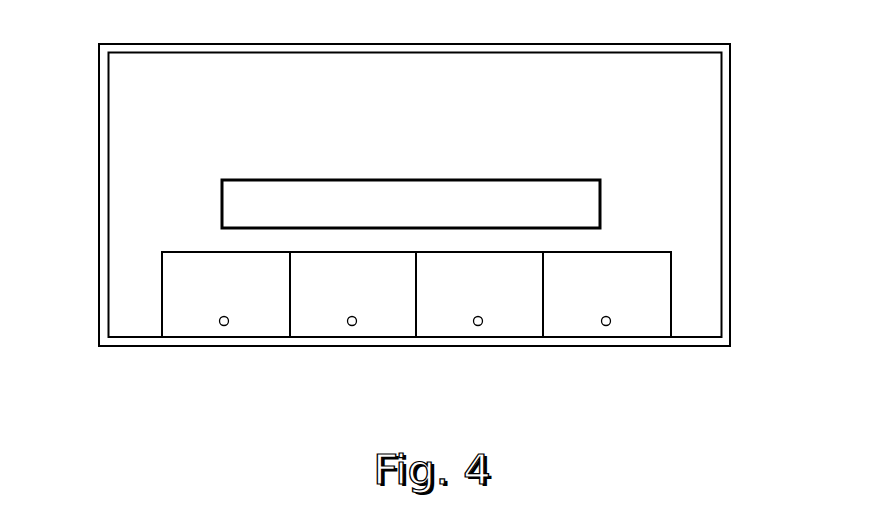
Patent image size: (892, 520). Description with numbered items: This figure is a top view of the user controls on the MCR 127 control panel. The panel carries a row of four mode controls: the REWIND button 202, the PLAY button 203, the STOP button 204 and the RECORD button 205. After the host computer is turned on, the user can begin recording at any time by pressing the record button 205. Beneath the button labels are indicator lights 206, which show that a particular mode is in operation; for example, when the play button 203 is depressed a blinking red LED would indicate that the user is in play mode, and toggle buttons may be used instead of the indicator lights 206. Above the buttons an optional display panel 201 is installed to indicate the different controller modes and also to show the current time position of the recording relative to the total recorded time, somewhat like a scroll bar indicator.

The MCR control panel 127 is at (435, 44).
The display panel 201 is at (517, 180).
The rewind button 202 is at (197, 330).
The play button 203 is at (325, 328).
The stop button 204 is at (513, 315).
The record button 205 is at (642, 315).
The indicator lights 206 is at (480, 327).